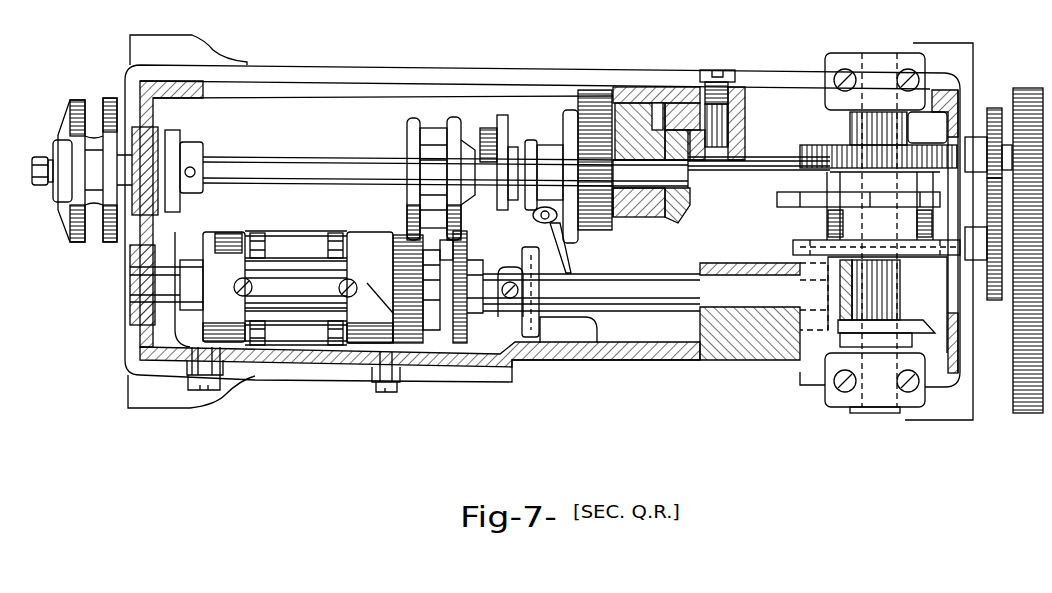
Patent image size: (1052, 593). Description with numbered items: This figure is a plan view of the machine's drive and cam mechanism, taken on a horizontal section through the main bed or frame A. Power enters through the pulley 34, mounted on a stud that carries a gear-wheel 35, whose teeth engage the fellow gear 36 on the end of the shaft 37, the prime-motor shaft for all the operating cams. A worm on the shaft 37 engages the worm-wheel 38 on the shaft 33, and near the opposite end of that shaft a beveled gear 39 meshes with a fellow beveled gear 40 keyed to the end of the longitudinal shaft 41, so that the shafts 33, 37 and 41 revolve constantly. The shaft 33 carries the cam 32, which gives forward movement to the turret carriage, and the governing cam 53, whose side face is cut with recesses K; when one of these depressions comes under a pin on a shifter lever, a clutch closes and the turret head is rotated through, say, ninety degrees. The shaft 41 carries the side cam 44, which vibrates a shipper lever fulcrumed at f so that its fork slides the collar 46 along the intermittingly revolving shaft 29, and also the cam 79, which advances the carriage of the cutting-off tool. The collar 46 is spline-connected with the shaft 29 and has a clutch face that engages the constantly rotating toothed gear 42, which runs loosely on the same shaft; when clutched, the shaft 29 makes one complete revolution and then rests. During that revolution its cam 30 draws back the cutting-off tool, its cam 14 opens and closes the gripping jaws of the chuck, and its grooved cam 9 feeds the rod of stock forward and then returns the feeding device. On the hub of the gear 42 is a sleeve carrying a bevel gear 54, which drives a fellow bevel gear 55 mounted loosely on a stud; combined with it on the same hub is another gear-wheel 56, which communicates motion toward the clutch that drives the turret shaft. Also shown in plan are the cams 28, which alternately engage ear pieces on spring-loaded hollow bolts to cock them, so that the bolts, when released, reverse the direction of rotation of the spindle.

The grooved cam 9 is at (82, 170).
The cam 14 is at (448, 113).
The cams 28 is at (313, 288).
The horizontal shaft 29 is at (445, 163).
The cam 30 is at (503, 142).
The cam 32 is at (777, 198).
The shaft 33 is at (885, 303).
The pulley 34 is at (1028, 242).
The gear-wheel 35 is at (983, 250).
The gear 36 is at (988, 134).
The prime-motor shaft 37 is at (800, 152).
The worm-wheel 38 is at (927, 127).
The beveled gear 39 is at (908, 330).
The beveled gear 40 is at (764, 311).
The longitudinal shaft 41 is at (568, 283).
The toothed gear 42 is at (598, 90).
The side cam 44 is at (523, 262).
The sliding collar 46 is at (548, 142).
The governing cam 53 is at (793, 248).
The bevel-gear 54 is at (685, 216).
The bevel-gear 55 is at (759, 172).
The gear-wheel 56 is at (745, 100).
The cam 79 is at (462, 234).
The main bed or frame A is at (535, 88).
The recesses K is at (879, 230).
The fulcrum f is at (552, 240).